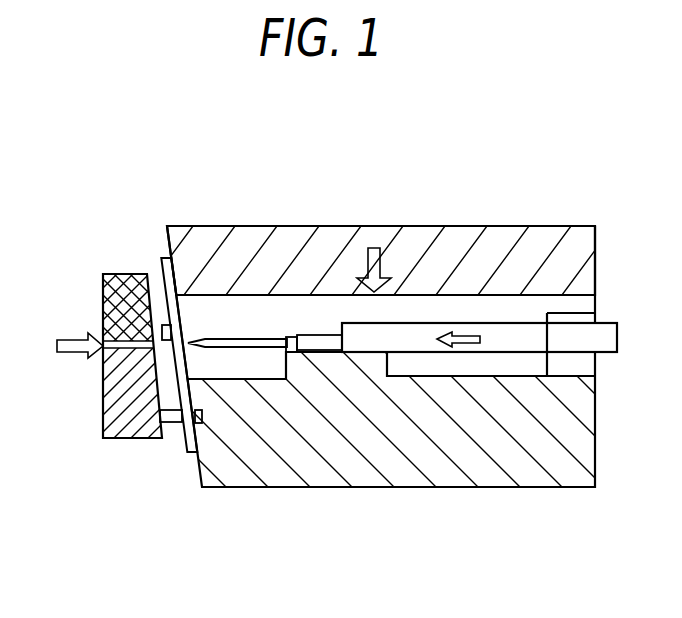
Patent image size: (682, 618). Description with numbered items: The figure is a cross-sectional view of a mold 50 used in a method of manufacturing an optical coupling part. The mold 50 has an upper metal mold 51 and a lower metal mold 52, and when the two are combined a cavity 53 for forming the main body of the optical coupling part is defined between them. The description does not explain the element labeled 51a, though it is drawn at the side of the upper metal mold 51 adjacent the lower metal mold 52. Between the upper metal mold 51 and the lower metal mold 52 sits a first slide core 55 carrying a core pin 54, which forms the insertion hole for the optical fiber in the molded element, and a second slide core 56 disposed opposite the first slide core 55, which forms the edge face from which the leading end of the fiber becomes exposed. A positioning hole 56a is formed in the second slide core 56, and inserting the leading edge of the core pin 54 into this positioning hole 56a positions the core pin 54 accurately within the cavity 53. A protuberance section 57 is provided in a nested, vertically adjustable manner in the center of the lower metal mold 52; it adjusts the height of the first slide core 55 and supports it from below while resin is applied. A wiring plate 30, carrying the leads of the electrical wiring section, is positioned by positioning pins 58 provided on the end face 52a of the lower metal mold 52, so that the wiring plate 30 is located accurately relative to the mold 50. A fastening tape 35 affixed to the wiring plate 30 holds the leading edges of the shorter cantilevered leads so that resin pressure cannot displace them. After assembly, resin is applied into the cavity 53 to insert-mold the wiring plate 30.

The wiring plate 30 is at (172, 462).
The fastening tape 35 is at (105, 288).
The mold 50 is at (359, 358).
The upper metal mold 51 is at (444, 207).
The guide plate 51a is at (167, 237).
The lower metal mold 52 is at (359, 411).
The end face 52a is at (198, 466).
The cavity 53 is at (438, 390).
The core pin 54 is at (237, 340).
The first slide core 55 is at (520, 310).
The second slide core 56 is at (134, 351).
The positioning hole 56a is at (106, 328).
The protuberance section 57 is at (342, 478).
The positioning pins 58 is at (168, 448).